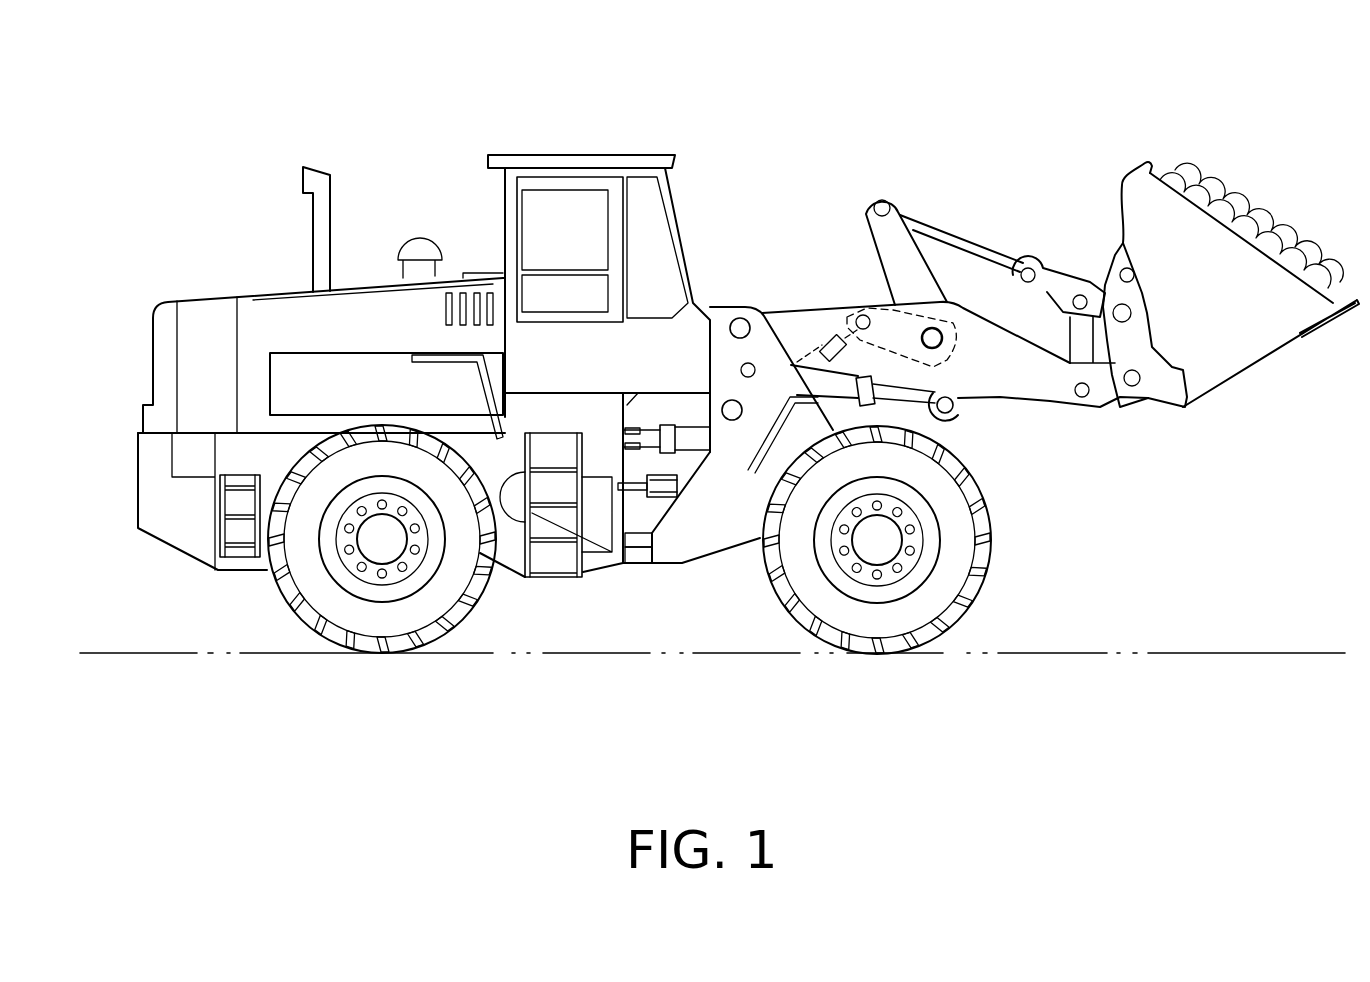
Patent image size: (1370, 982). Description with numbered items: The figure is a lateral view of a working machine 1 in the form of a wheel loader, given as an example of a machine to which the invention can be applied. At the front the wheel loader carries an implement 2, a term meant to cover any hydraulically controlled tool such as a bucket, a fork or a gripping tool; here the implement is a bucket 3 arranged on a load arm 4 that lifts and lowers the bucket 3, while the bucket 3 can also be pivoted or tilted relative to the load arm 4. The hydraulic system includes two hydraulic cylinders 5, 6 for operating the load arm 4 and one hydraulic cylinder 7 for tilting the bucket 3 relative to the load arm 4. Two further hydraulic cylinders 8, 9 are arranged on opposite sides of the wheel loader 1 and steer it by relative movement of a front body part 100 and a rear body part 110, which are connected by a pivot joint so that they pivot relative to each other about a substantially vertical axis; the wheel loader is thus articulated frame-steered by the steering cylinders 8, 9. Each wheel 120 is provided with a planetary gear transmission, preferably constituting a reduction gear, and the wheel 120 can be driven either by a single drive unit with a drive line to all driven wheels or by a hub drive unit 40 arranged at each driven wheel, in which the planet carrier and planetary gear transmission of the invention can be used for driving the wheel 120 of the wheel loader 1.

The working machine 1 is at (578, 123).
The implement 2 is at (1273, 195).
The bucket 3 is at (1215, 343).
The load arm 4 is at (1012, 203).
The hydraulic cylinder 5 is at (962, 453).
The hydraulic cylinder 6 is at (907, 407).
The hydraulic cylinder 7 is at (847, 333).
The hydraulic cylinder 8 is at (691, 592).
The hydraulic cylinder 9 is at (687, 442).
The hub drive unit 40 is at (378, 540).
The front body part 100 is at (693, 530).
The rear body part 110 is at (198, 530).
The wheel 120 is at (390, 617).